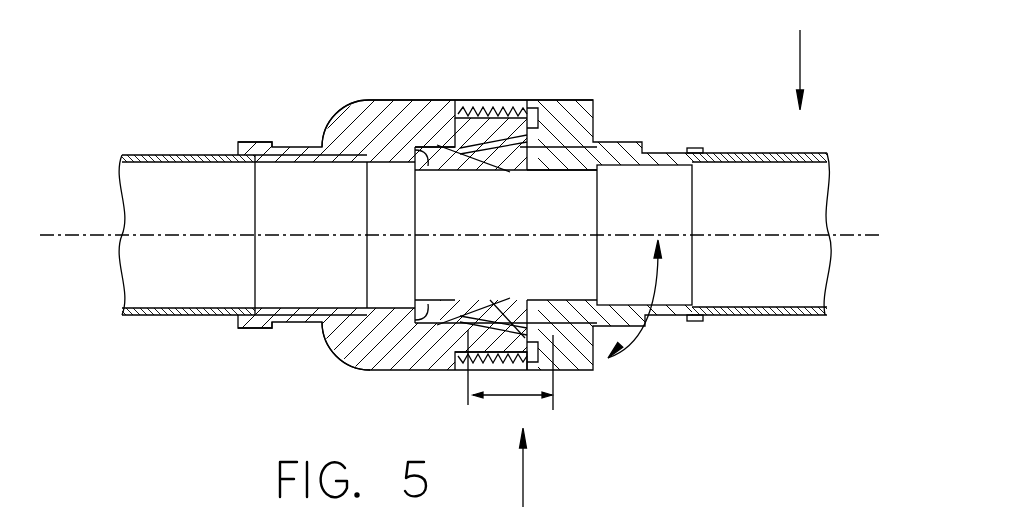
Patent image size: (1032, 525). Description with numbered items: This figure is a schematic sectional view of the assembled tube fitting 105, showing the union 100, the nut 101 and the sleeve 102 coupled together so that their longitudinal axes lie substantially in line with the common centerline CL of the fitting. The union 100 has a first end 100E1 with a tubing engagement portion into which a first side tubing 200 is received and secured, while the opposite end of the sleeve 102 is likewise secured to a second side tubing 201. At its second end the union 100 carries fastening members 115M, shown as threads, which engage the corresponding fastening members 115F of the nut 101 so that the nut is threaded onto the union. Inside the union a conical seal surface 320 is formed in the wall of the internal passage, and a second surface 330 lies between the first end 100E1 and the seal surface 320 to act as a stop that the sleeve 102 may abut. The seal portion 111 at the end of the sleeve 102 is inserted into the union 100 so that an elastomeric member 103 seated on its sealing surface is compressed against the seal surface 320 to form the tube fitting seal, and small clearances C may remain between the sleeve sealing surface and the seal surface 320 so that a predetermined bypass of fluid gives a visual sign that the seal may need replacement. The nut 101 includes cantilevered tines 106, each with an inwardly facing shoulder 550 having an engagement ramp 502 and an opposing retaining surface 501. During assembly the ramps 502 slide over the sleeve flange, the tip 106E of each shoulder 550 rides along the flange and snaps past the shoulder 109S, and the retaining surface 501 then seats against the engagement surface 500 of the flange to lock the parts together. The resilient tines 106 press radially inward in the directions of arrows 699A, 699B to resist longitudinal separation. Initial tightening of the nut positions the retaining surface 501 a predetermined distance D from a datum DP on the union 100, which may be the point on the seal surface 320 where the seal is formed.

The union 100 is at (296, 92).
The first end of the union 100E1 is at (220, 135).
The nut 101 is at (528, 78).
The sleeve 102 is at (660, 135).
The elastomeric member 103 is at (433, 105).
The tube fitting 105 is at (262, 360).
The tine 106 is at (550, 340).
The tip of the shoulder 106E is at (592, 172).
The shoulder 109S is at (592, 362).
The seal portion 111 is at (356, 360).
The fastening members of the nut 115F is at (462, 105).
The fastening members of the union 115M is at (507, 105).
The tubing 200 is at (185, 316).
The tubing 201 is at (765, 153).
The seal surface 320 is at (532, 107).
The second surface 330 is at (428, 162).
The engagement surface 500 is at (583, 107).
The retaining surface 501 is at (535, 165).
The engagement ramp 502 is at (590, 132).
The inwardly facing shoulder 550 is at (553, 348).
The arrow 699A is at (803, 37).
The arrow 699B is at (524, 470).
The clearance C is at (510, 172).
The predetermined distance D is at (512, 397).
The datum DP is at (443, 372).
The centerline CL is at (862, 237).